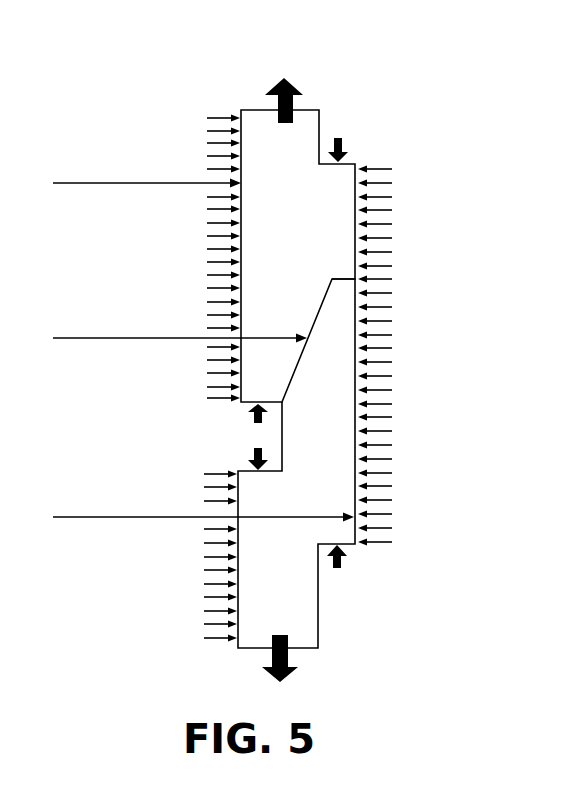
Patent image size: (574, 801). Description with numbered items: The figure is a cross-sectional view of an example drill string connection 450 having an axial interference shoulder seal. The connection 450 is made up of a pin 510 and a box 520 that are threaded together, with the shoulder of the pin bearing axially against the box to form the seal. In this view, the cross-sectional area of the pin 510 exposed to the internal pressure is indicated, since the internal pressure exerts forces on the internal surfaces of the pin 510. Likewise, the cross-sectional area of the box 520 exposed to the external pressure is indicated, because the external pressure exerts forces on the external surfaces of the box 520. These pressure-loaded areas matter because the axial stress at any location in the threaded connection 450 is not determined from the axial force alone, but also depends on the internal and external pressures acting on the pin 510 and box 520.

The free body diagram of pin and box 450 is at (124, 54).
The pin 510 is at (317, 252).
The box 520 is at (337, 497).